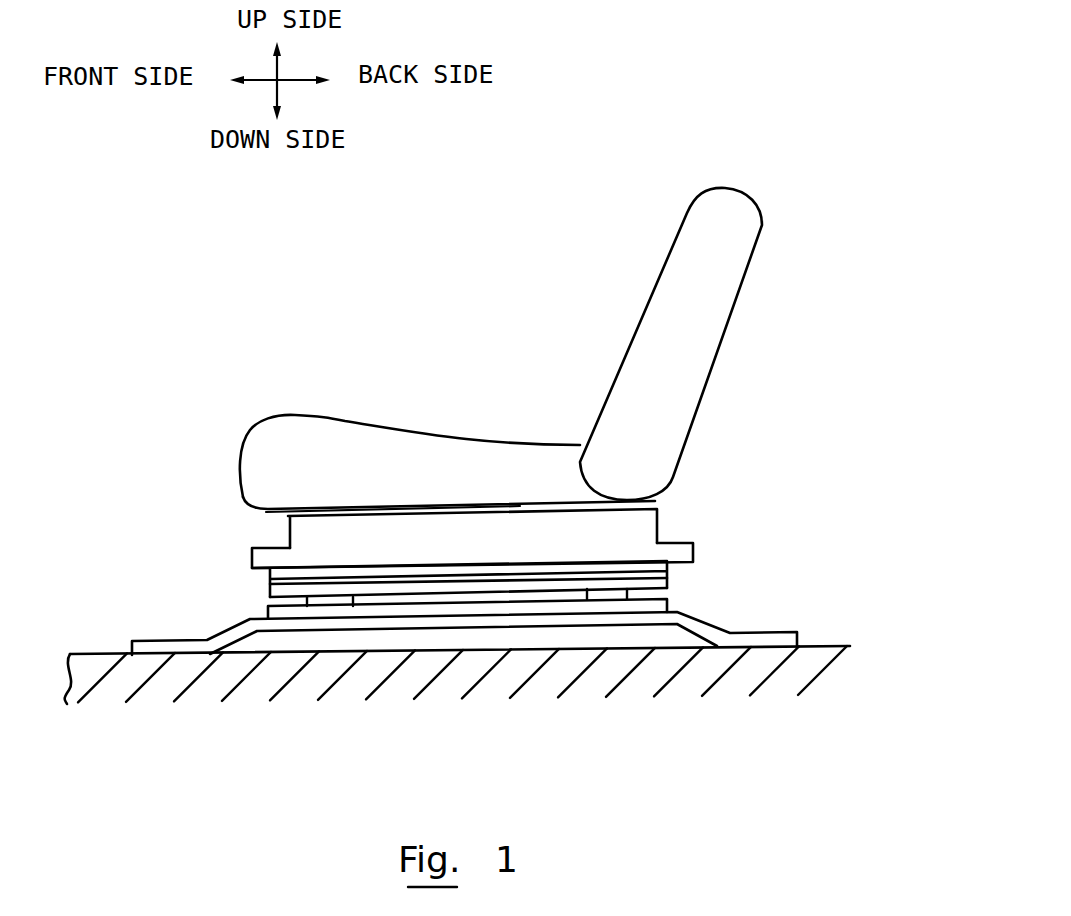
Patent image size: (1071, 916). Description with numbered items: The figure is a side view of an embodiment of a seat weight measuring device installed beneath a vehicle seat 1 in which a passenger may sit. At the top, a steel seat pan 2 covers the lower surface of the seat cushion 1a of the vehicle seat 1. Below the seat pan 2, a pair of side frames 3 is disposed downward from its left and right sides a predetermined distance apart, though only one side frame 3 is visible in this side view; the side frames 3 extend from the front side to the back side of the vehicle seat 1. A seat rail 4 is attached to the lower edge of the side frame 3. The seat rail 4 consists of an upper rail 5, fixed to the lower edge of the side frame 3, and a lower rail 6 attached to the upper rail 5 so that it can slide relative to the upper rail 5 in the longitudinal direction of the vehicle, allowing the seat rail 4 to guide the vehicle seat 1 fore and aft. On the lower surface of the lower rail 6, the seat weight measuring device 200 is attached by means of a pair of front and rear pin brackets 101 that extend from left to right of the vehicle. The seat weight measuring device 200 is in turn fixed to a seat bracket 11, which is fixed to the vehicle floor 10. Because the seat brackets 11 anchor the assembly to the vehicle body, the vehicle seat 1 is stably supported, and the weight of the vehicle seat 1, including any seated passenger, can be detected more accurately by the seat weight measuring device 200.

The vehicle seat 1 is at (551, 421).
The seat cushion 1a is at (315, 433).
The seat pan 2 is at (473, 505).
The side frame 3 is at (625, 528).
The seat rail 4 is at (575, 559).
The upper rail 5 is at (658, 568).
The lower rail 6 is at (658, 581).
The vehicle floor 10 is at (849, 655).
The seat bracket 11 is at (228, 625).
The pin bracket 101 is at (330, 600).
The seat weight measuring device 200 is at (420, 612).